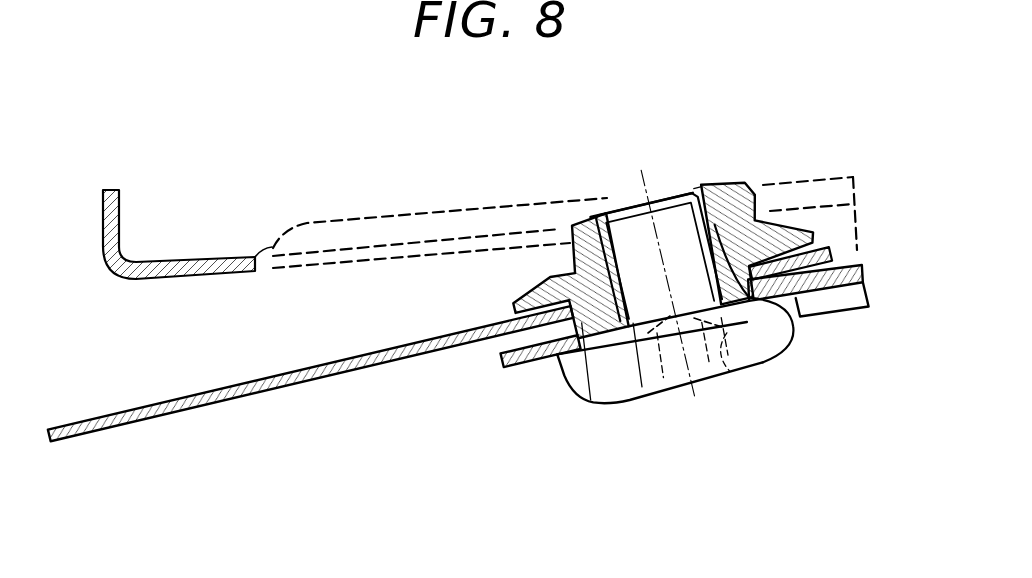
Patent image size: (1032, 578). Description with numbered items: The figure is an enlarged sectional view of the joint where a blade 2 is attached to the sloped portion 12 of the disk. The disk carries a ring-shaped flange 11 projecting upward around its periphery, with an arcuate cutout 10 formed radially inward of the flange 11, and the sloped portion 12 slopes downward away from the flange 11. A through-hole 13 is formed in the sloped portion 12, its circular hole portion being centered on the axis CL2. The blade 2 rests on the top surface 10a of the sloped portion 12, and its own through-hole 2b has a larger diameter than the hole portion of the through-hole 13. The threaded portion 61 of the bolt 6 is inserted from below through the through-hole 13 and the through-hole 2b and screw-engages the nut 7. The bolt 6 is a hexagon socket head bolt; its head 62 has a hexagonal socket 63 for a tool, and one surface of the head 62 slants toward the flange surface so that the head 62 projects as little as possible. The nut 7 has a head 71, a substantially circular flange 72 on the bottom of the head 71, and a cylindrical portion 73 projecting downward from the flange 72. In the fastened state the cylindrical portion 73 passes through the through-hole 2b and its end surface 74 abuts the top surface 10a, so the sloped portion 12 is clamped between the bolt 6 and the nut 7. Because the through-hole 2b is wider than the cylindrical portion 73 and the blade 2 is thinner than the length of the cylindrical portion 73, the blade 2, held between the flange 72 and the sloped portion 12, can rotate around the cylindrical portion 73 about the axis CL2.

The blade 2 is at (181, 412).
The through-hole 2b is at (710, 188).
The bolt 6 is at (609, 200).
The threaded portion 61 is at (686, 212).
The nut 7 is at (757, 192).
The head 71 is at (548, 267).
The flange 72 is at (524, 360).
The cylindrical portion 73 is at (587, 394).
The end surface 74 is at (786, 356).
The cutout 10 is at (273, 248).
The top surface 10a is at (770, 320).
The flange 11 is at (103, 237).
The sloped portion 12 is at (542, 358).
The through-hole 13 is at (637, 352).
The head 62 is at (790, 333).
The hexagonal socket 63 is at (736, 396).
The axis CL2 is at (678, 297).